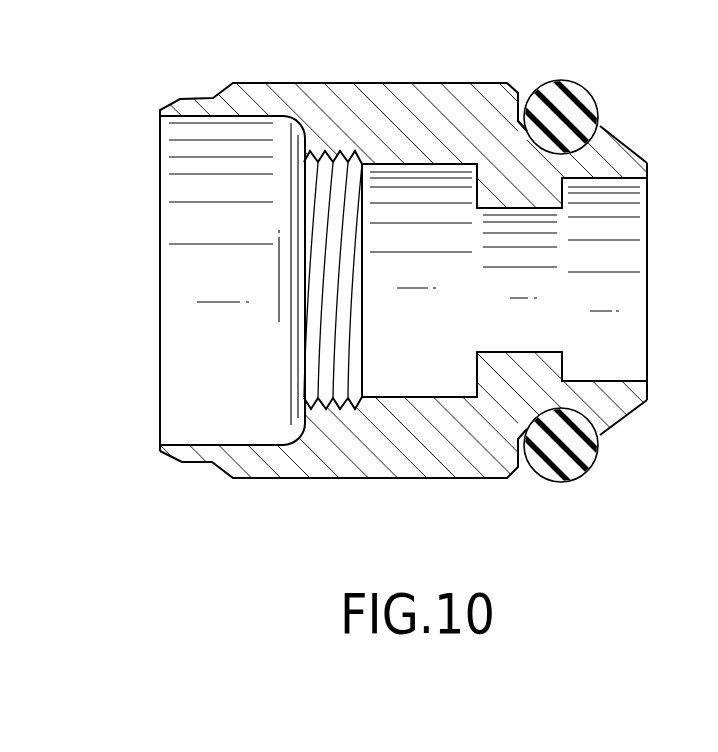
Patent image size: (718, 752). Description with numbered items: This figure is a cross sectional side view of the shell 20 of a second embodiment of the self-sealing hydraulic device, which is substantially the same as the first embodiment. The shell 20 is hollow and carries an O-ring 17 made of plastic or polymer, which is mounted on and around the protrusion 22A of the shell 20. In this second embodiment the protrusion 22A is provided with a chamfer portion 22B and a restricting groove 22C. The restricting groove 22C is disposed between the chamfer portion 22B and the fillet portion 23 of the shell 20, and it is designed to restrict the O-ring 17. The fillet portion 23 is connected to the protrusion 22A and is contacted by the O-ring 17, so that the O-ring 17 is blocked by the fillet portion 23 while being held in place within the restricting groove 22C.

The shell 20 is at (386, 96).
The O-ring 17 is at (568, 113).
The fillet portion 23 is at (525, 101).
The chamfer portion 22B is at (618, 139).
The protrusion 22A is at (613, 402).
The restricting groove 22C is at (558, 410).